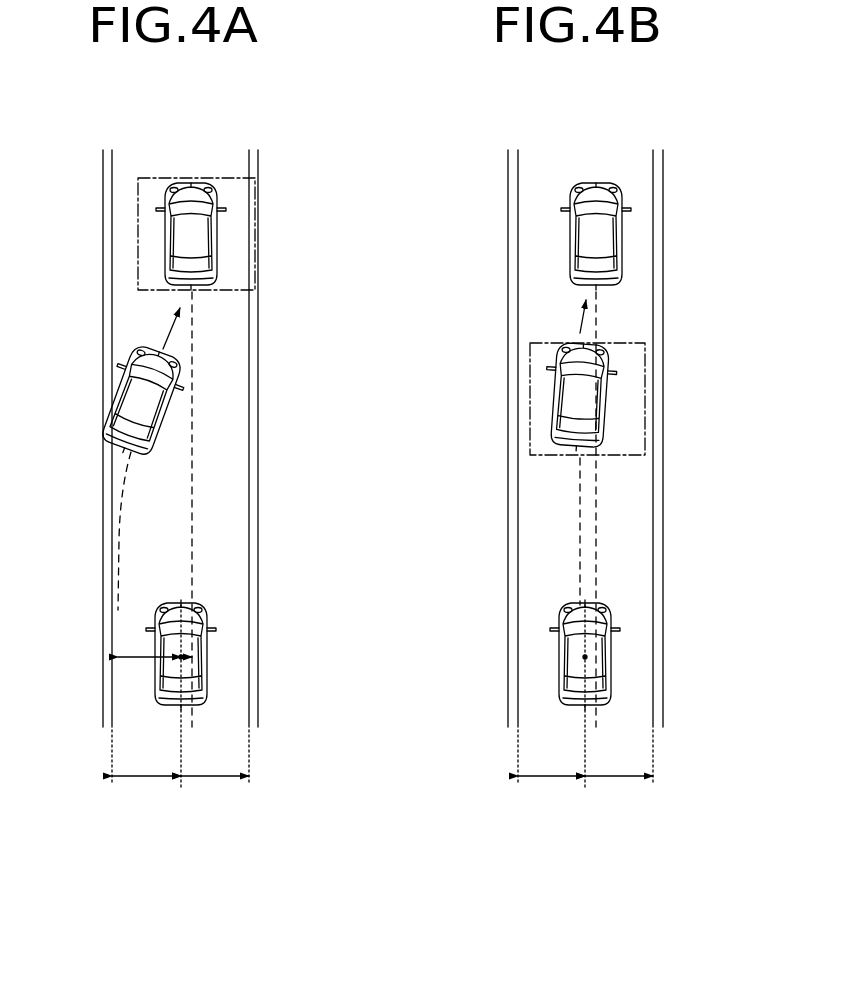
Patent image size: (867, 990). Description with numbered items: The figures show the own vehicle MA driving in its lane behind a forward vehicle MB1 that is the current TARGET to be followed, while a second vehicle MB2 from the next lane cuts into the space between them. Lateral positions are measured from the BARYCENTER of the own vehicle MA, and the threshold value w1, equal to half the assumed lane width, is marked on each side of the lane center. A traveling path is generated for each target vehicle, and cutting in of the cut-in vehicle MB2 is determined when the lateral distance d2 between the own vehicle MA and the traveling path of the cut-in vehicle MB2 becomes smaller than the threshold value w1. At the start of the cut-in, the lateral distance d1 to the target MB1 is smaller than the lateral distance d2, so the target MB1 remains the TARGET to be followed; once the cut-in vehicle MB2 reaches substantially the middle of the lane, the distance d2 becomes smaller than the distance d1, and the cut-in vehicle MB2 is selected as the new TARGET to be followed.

In FIG. 4A, the target to be followed MB1 is at (218, 259).
In FIG. 4B, the target to be followed MB1 is at (623, 259).
In FIG. 4A, the cut-in vehicle MB2 is at (114, 417).
In FIG. 4B, the cut-in vehicle MB2 is at (608, 362).
In FIG. 4A, the own vehicle MA is at (205, 616).
In FIG. 4B, the own vehicle MA is at (612, 690).
In FIG. 4A, the lateral distance d1 is at (203, 672).
In FIG. 4A, the lateral distance d2 is at (140, 659).
In FIG. 4A, the threshold value w1 is at (215, 792).
In FIG. 4B, the threshold value w1 is at (618, 792).
In FIG. 4A, the barycenter of the own vehicle BARYCENTER is at (183, 657).
In FIG. 4B, the barycenter of the own vehicle BARYCENTER is at (587, 657).
In FIG. 4A, the target to be followed TARGET is at (153, 178).
In FIG. 4B, the target to be followed TARGET is at (530, 376).